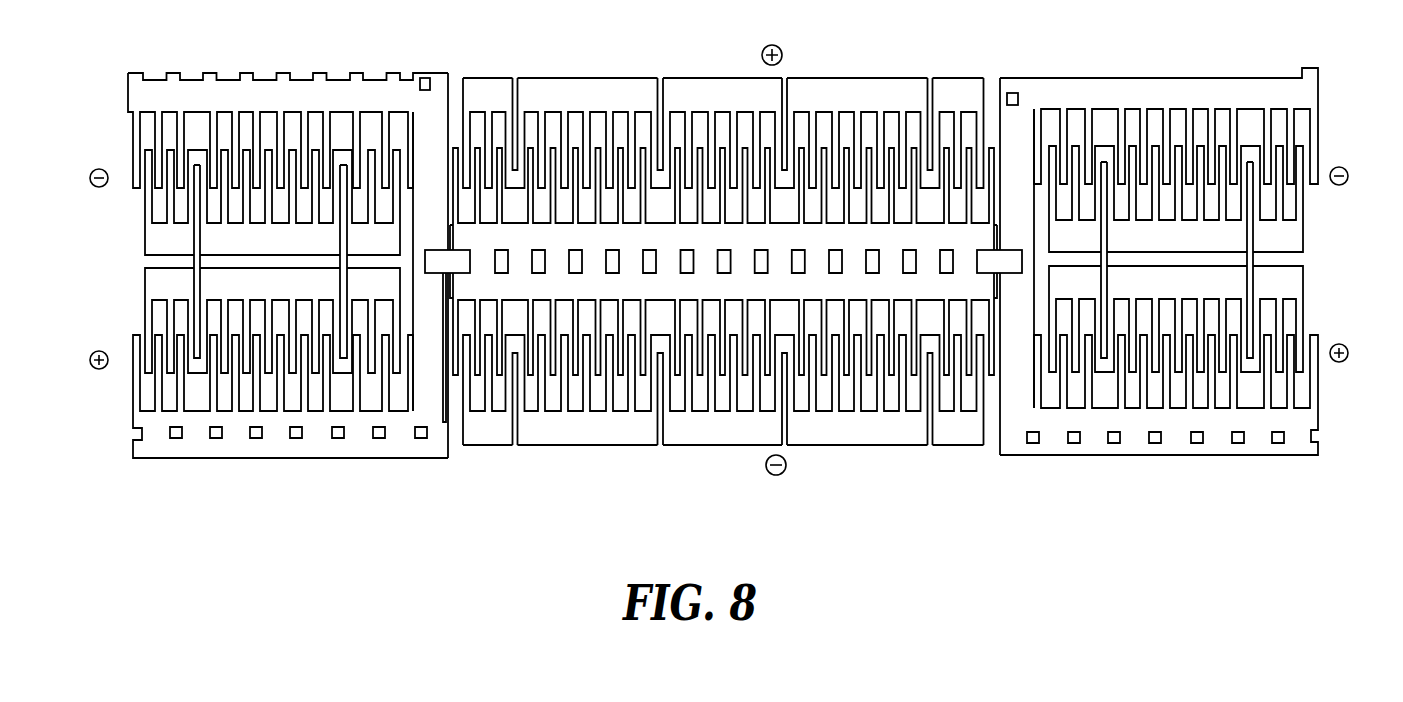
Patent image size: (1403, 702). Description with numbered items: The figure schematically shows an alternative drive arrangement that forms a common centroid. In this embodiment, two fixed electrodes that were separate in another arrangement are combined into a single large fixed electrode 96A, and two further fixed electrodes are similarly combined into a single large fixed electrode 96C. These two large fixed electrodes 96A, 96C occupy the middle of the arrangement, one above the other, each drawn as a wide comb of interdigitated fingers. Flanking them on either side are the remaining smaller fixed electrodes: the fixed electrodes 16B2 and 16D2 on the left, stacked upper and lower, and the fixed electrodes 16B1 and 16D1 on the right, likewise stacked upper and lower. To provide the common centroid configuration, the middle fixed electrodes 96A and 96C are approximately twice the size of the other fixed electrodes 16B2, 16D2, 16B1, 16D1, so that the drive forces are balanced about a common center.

The single large fixed electrode 96A is at (700, 78).
The single large fixed electrode 96C is at (738, 443).
The fixed electrode 16B2 is at (146, 252).
The fixed electrode 16D2 is at (146, 288).
The fixed electrode 16B1 is at (1304, 242).
The fixed electrode 16D1 is at (1304, 288).